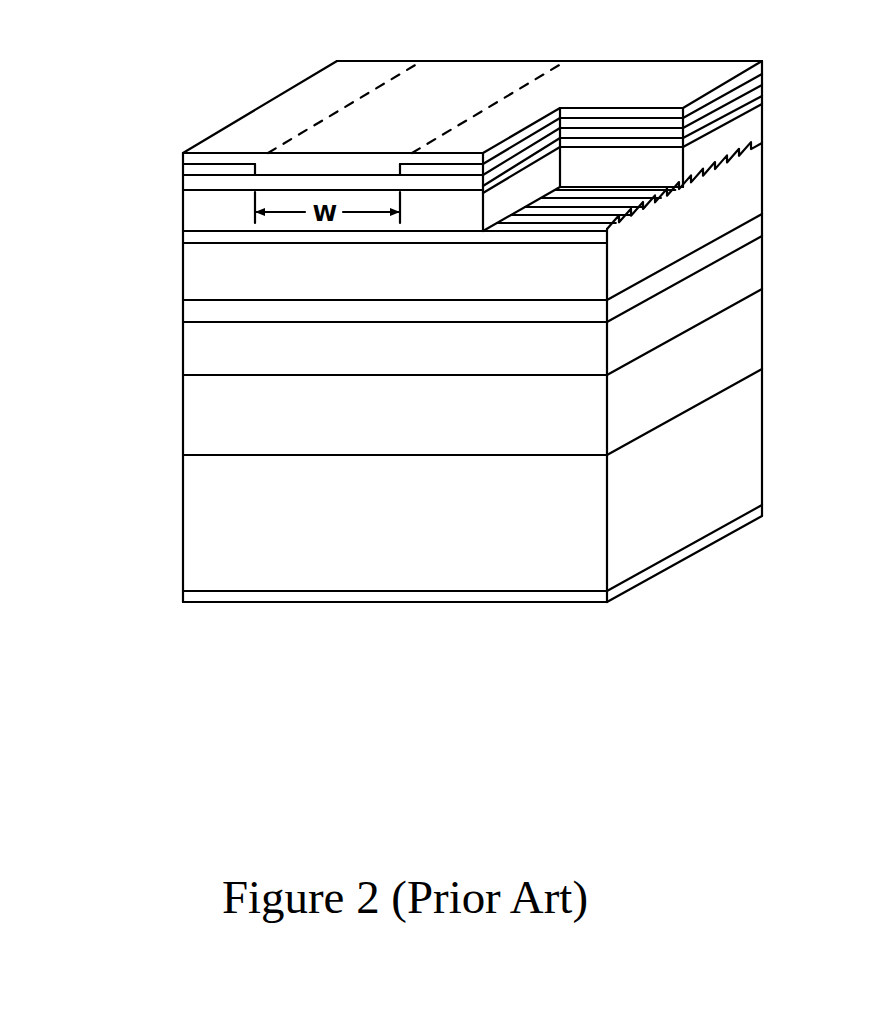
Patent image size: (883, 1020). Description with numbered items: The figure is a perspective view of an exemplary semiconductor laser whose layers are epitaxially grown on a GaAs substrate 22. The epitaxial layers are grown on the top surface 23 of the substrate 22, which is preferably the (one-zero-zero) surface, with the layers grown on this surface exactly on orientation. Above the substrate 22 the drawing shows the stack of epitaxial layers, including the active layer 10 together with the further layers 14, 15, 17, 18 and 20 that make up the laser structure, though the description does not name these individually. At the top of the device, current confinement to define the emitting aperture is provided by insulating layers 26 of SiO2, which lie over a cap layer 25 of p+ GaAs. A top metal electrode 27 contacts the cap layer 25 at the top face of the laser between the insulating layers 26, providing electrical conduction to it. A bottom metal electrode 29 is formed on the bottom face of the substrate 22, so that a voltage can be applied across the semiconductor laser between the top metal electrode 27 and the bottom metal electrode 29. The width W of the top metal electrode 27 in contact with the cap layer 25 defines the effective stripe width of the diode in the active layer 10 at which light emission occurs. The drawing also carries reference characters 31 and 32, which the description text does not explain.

The active layer 10 is at (422, 295).
The lower cladding layer 14 is at (422, 348).
The upper cladding layer 15 is at (422, 257).
The buffer layer 17 is at (422, 416).
The upper contact layer 18 is at (422, 159).
The grating layer 20 is at (470, 201).
The GaAs substrate 22 is at (422, 547).
The top surface 23 is at (290, 556).
The cap layer 25 is at (368, 89).
The insulating layers 26 is at (283, 146).
The top metal electrode 27 is at (549, 47).
The bottom metal electrode 29 is at (472, 587).
The substrate body 31 is at (500, 602).
The ridge stripe 32 is at (417, 78).